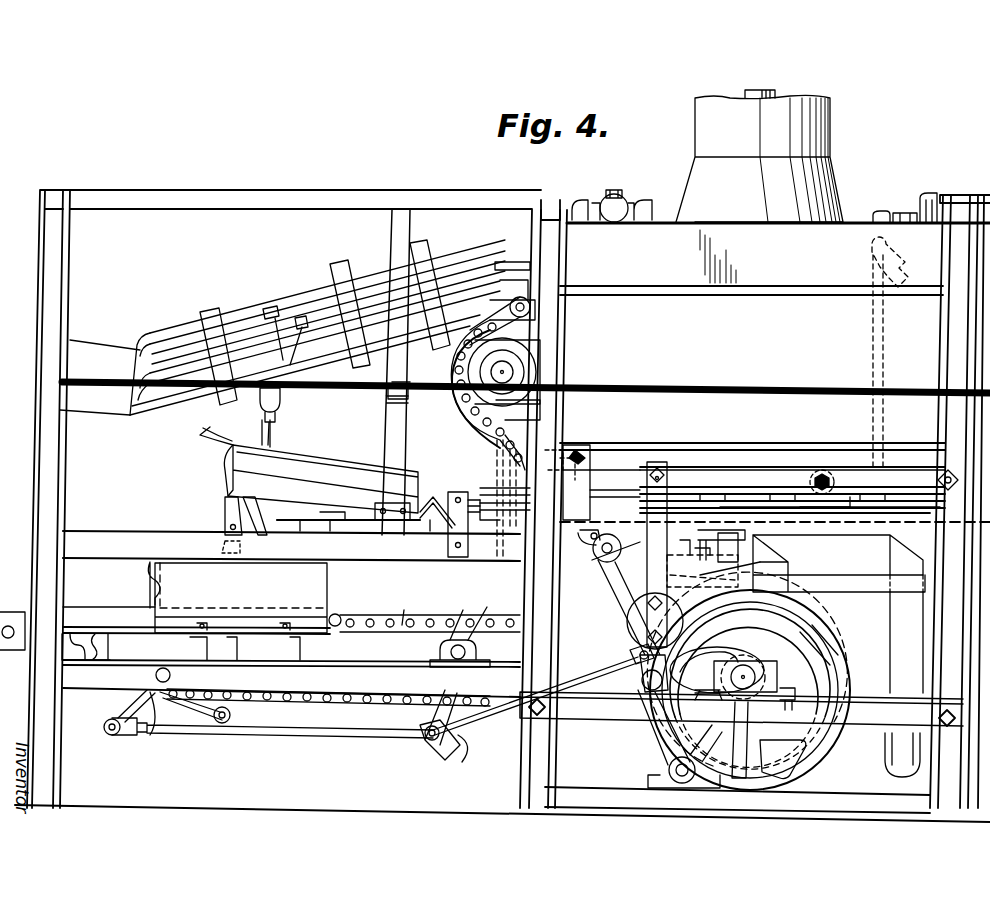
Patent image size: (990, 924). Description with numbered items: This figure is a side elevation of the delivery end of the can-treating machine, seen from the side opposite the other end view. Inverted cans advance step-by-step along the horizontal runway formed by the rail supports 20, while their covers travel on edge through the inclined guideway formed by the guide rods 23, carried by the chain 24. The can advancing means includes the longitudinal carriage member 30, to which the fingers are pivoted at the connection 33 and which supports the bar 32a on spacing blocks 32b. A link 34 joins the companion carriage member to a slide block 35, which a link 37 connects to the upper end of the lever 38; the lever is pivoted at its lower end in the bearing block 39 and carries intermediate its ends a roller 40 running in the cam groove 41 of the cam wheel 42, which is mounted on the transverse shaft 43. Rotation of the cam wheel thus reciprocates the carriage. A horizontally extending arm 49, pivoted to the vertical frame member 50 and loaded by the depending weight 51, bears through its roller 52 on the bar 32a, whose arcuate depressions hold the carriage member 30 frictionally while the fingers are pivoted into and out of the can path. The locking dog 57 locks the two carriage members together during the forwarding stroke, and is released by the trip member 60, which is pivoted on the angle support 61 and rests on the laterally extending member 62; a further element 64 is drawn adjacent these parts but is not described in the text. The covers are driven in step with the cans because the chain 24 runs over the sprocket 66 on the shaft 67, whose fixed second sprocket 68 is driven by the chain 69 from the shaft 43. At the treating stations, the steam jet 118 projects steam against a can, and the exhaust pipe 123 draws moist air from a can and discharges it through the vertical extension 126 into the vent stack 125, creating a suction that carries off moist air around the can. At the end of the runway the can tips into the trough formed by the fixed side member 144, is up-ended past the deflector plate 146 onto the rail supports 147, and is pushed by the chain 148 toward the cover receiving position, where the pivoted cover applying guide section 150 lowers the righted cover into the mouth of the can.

The rail supports 20 is at (493, 530).
The guide rods 23 is at (512, 265).
The chain 24 is at (470, 410).
The carriage member 30 is at (778, 500).
The bar 32a is at (848, 504).
The spacing blocks 32b is at (808, 505).
The pivotal connection 33 is at (728, 546).
The link 34 is at (700, 566).
The slide block 35 is at (702, 565).
The link 37 is at (610, 546).
The lever 38 is at (618, 606).
The bearing block 39 is at (652, 788).
The roller 40 is at (665, 668).
The cam groove 41 is at (758, 623).
The cam wheel 42 is at (810, 768).
The transverse shaft 43 is at (752, 678).
The horizontally extending arm 49 is at (735, 488).
The vertical frame member 50 is at (945, 440).
The weight 51 is at (635, 651).
The roller 52 is at (835, 482).
The locking dog 57 is at (598, 492).
The trip member 60 is at (575, 452).
The angle support 61 is at (580, 480).
The laterally extending member 62 is at (527, 486).
The block 64 is at (576, 482).
The sprocket 66 is at (458, 370).
The shaft 67 is at (525, 372).
The second sprocket 68 is at (460, 396).
The chain 69 is at (500, 436).
The steam jet 118 is at (912, 248).
The exhaust pipe 123 is at (860, 582).
The vent stack 125 is at (747, 189).
The vertical extension 126 is at (782, 96).
The side member 144 is at (340, 452).
The deflector plate 146 is at (156, 585).
The rail supports 147 is at (97, 618).
The chain 148 is at (362, 646).
The cover applying guide section 150 is at (260, 304).